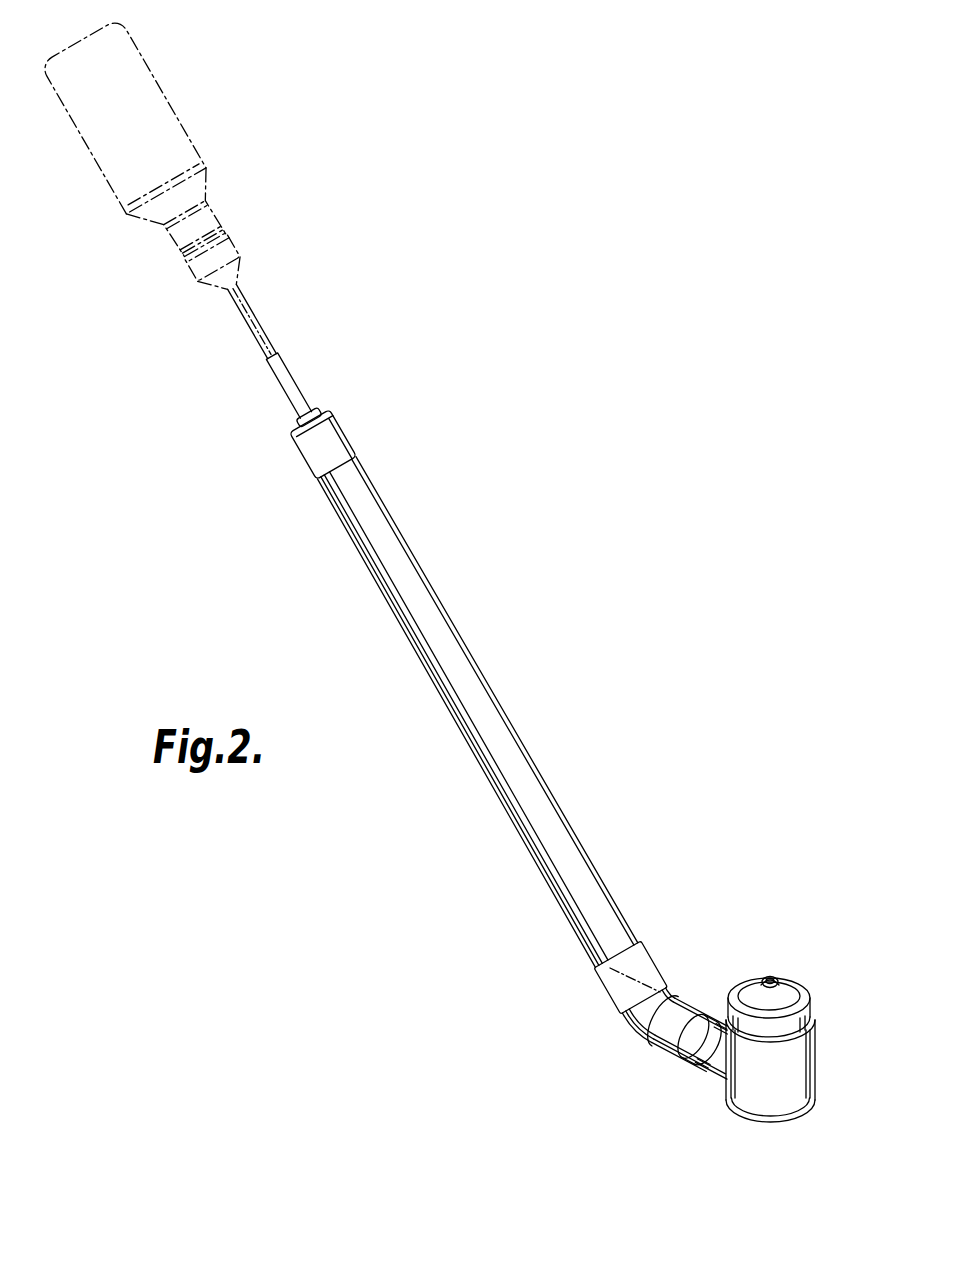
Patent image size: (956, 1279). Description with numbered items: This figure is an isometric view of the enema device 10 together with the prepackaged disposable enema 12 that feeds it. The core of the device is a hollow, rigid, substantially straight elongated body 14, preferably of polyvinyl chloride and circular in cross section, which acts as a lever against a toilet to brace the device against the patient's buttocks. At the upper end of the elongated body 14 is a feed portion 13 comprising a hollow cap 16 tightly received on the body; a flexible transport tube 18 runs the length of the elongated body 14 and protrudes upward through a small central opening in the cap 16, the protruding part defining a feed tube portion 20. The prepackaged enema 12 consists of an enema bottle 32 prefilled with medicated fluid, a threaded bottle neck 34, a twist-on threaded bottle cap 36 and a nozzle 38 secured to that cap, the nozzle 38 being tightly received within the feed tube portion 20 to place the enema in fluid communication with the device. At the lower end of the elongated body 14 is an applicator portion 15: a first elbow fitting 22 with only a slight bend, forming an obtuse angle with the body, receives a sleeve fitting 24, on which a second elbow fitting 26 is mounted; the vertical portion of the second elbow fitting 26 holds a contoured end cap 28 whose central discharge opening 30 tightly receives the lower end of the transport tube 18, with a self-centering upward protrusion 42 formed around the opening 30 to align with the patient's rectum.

The enema device 10 is at (521, 741).
The prepackaged enema 12 is at (179, 188).
The feed portion 13 is at (306, 395).
The elongated body 14 is at (500, 713).
The applicator portion 15 is at (614, 982).
The cap 16 is at (338, 428).
The transport tube 18 is at (313, 413).
The feed tube portion 20 is at (281, 363).
The first elbow fitting 22 is at (651, 962).
The sleeve fitting 24 is at (695, 1040).
The second elbow fitting 26 is at (747, 1108).
The end cap 28 is at (805, 985).
The discharge opening 30 is at (767, 977).
The enema bottle 32 is at (153, 77).
The bottle neck 34 is at (212, 215).
The bottle cap 36 is at (188, 270).
The nozzle 38 is at (253, 306).
The self-centering upward protrusion 42 is at (786, 978).